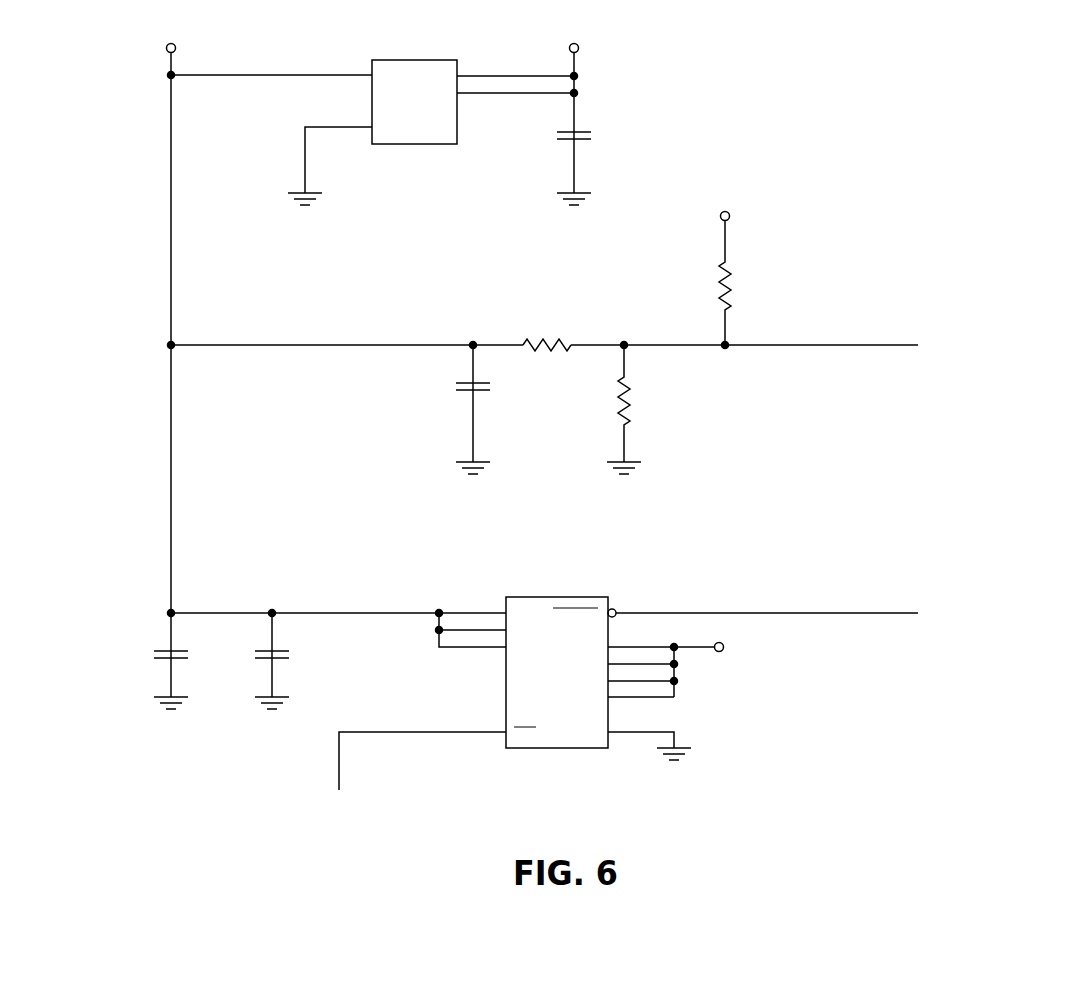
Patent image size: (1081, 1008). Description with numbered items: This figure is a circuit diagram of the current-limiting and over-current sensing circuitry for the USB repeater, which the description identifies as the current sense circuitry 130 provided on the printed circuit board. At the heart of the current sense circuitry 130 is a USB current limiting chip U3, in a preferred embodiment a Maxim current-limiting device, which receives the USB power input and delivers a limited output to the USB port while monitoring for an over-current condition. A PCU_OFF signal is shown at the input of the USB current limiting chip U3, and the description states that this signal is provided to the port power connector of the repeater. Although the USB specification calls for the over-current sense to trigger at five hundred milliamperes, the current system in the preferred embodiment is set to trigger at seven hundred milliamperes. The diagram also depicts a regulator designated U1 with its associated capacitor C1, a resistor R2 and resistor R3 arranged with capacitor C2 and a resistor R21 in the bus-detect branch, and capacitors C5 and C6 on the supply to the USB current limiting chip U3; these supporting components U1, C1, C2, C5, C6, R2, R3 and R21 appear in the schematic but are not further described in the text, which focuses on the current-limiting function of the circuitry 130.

The current sense circuitry 130 is at (600, 409).
The voltage regulator LT1117CST-3.3 U1 is at (432, 101).
The USB current limiting chip U3 is at (560, 668).
The capacitor 4.7UF 25V C1 is at (587, 144).
The capacitor 1UF 16V C2 is at (487, 396).
The capacitor 1UF 16V C5 is at (185, 662).
The capacitor 0.1UF 16V C6 is at (286, 662).
The resistor 100K R2 is at (547, 345).
The resistor 100K R3 is at (647, 403).
The resistor 10.0K DNI R21 is at (754, 283).